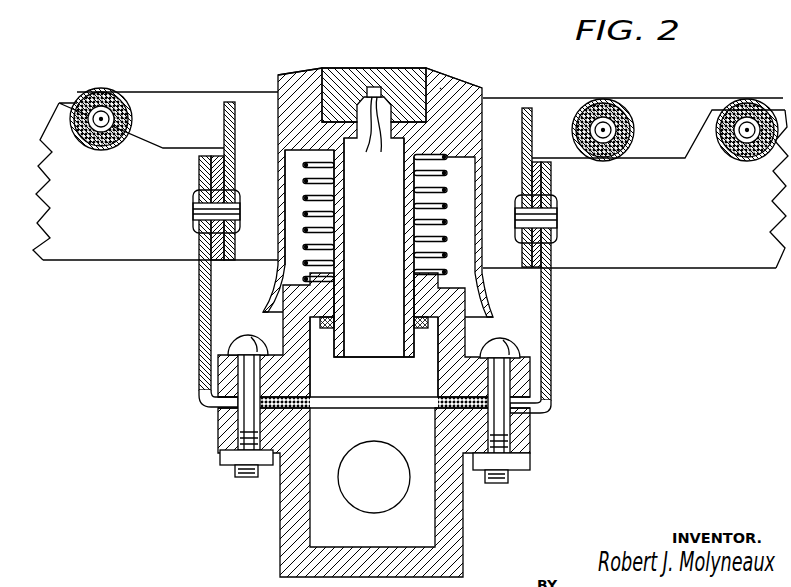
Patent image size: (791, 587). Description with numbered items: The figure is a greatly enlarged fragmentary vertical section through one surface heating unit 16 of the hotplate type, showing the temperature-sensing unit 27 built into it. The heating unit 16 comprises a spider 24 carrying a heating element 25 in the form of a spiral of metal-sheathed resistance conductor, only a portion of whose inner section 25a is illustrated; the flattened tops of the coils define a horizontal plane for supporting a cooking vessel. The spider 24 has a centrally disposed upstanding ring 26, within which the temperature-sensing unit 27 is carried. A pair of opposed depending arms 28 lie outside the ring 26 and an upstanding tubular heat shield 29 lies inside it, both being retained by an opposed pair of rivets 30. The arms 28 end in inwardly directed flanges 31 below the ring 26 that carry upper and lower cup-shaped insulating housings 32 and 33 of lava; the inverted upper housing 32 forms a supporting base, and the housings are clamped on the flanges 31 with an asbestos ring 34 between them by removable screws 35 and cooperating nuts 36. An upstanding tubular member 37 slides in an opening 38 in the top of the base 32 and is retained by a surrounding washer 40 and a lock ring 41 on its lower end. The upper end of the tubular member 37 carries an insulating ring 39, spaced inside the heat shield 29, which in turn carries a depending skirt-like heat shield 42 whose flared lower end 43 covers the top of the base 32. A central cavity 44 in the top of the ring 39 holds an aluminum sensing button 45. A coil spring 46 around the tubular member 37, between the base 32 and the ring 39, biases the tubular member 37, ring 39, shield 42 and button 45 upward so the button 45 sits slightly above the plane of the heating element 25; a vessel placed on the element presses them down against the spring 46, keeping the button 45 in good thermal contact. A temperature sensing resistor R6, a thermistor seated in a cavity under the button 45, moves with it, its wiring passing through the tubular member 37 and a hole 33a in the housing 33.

The surface heating unit 16 is at (688, 88).
The spider 24 is at (126, 236).
The heating element 25 is at (116, 90).
The inner section 25a is at (728, 157).
The upstanding ring 26 is at (218, 156).
The temperature-sensing unit 27 is at (380, 40).
The depending arms 28 is at (199, 322).
The tubular heat shield 29 is at (238, 100).
The rivets 30 is at (193, 205).
The flanges 31 is at (218, 405).
The upper insulating housing 32 is at (437, 385).
The lower insulating housing 33 is at (312, 507).
The hole 33a is at (400, 497).
The asbestos ring 34 is at (362, 404).
The removable screws 35 is at (506, 340).
The nuts 36 is at (225, 460).
The tubular member 37 is at (373, 212).
The opening 38 is at (406, 292).
The insulating ring 39 is at (480, 92).
The washer 40 is at (323, 328).
The lock ring 41 is at (336, 322).
The depending tubular heat shield 42 is at (268, 158).
The outwardly flared lower end 43 is at (264, 311).
The central cavity 44 is at (332, 72).
The sensing button 45 is at (440, 88).
The coil spring 46 is at (447, 208).
The temperature sensing resistor R6 is at (380, 88).